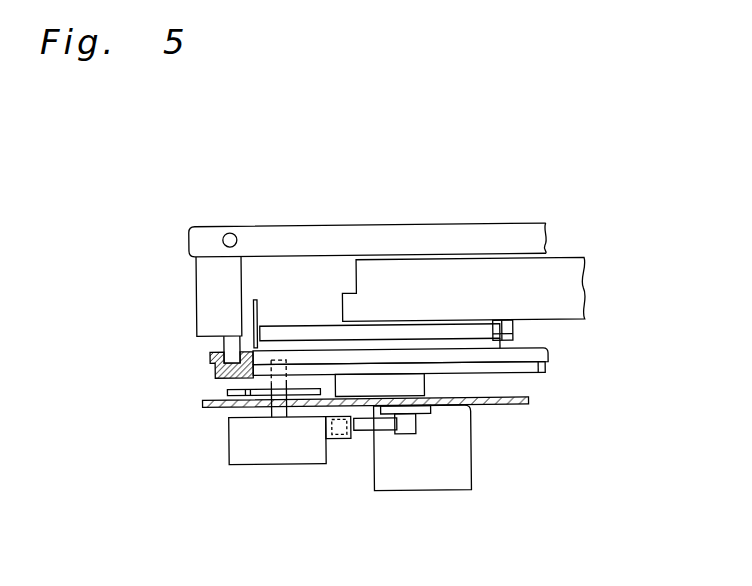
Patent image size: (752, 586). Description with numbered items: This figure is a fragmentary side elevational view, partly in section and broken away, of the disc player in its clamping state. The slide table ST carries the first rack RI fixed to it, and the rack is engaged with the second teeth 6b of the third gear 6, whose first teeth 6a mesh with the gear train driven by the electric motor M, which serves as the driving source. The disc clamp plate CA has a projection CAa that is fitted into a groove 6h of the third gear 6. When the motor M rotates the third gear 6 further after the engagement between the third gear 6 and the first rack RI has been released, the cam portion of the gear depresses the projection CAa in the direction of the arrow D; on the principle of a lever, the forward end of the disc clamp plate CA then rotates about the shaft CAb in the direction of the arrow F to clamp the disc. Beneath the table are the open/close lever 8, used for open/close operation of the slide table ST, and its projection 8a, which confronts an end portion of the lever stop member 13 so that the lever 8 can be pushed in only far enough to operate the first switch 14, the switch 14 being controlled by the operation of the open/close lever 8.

The disc clamp plate CA is at (425, 224).
The projection CAa is at (224, 341).
The shaft CAb is at (240, 228).
The third gear 6 is at (313, 325).
The first teeth 6a is at (545, 370).
The second teeth 6b is at (257, 299).
The groove 6h is at (212, 368).
The slide table ST is at (582, 258).
The first rack RI is at (513, 331).
The arrow F is at (516, 140).
The arrow D is at (200, 362).
The lever stop member 13 is at (230, 397).
The projection 8a is at (270, 413).
The open/close lever 8 is at (303, 464).
The first switch 14 is at (400, 436).
The electric motor M is at (471, 457).